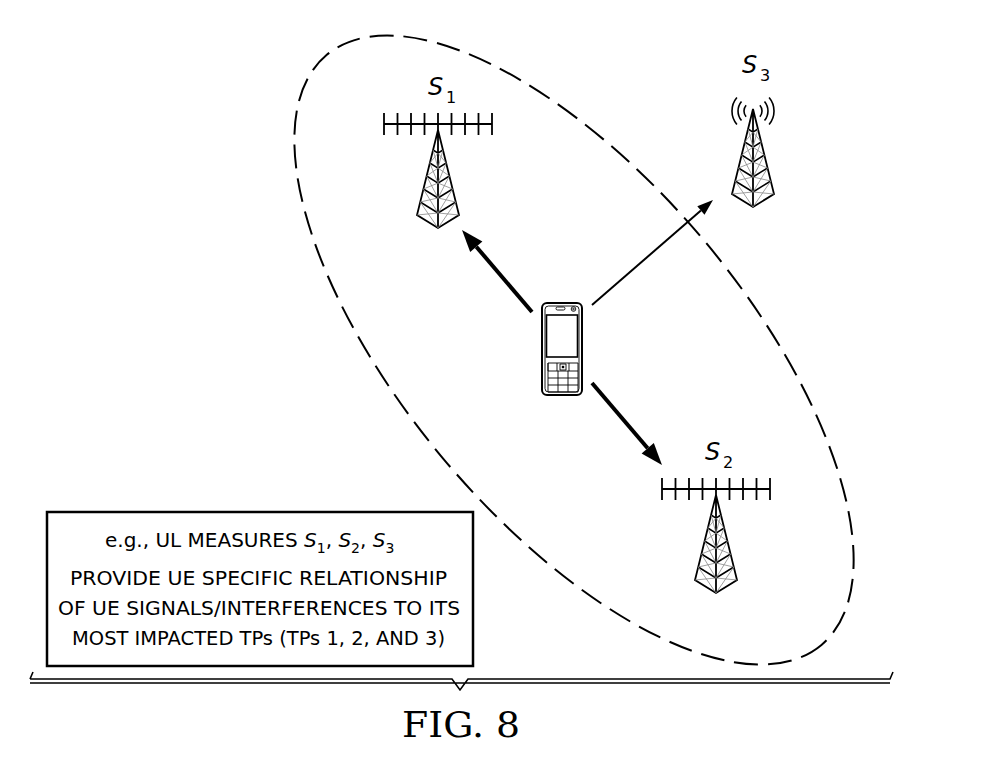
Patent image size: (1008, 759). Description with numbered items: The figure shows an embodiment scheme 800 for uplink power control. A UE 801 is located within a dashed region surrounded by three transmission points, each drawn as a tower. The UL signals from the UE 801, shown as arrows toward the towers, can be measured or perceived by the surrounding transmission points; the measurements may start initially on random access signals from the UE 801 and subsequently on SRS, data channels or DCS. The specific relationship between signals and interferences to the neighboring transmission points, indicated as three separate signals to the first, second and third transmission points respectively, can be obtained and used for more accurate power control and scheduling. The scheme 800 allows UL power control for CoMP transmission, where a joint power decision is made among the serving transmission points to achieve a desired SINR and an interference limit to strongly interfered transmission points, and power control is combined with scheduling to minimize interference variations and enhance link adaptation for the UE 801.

The scheme for UL power control 800 is at (220, 239).
The UE 801 is at (562, 395).